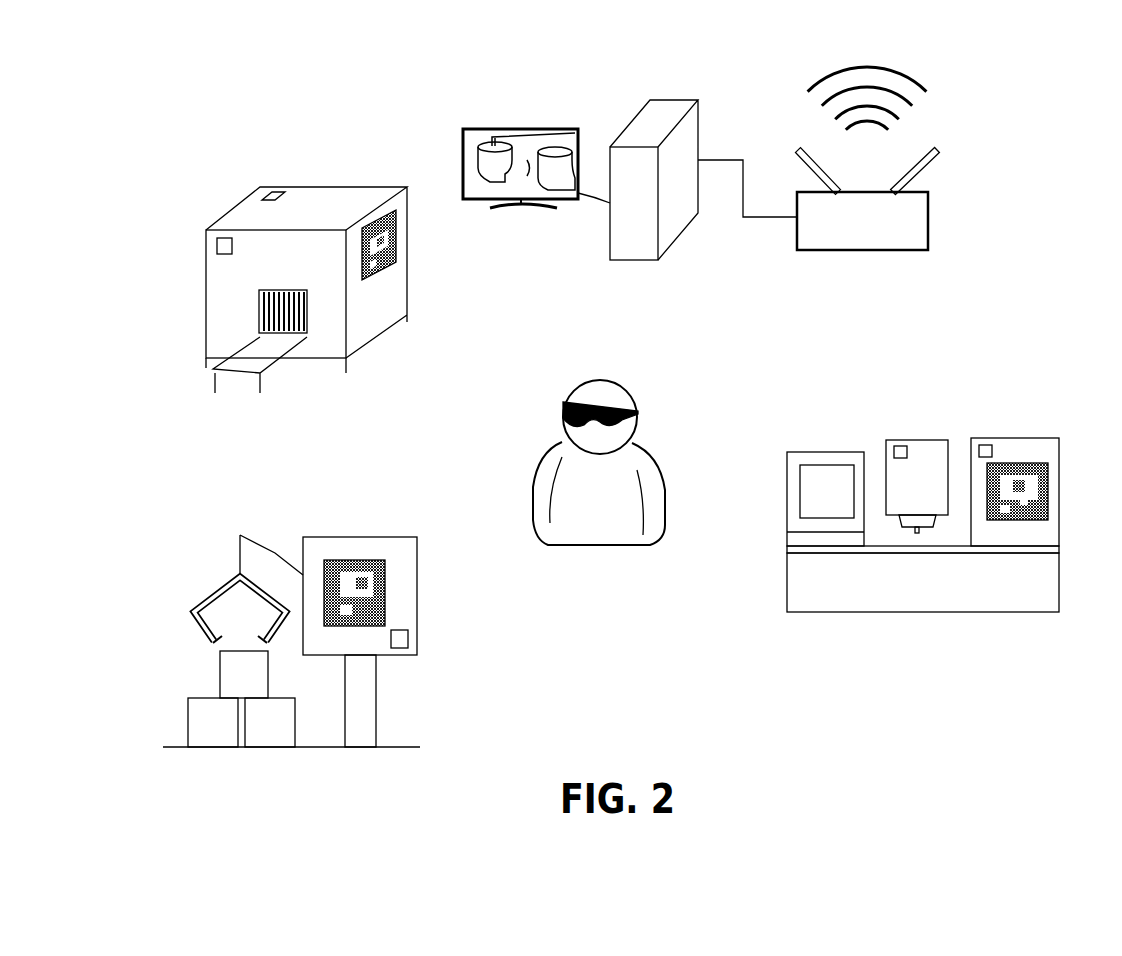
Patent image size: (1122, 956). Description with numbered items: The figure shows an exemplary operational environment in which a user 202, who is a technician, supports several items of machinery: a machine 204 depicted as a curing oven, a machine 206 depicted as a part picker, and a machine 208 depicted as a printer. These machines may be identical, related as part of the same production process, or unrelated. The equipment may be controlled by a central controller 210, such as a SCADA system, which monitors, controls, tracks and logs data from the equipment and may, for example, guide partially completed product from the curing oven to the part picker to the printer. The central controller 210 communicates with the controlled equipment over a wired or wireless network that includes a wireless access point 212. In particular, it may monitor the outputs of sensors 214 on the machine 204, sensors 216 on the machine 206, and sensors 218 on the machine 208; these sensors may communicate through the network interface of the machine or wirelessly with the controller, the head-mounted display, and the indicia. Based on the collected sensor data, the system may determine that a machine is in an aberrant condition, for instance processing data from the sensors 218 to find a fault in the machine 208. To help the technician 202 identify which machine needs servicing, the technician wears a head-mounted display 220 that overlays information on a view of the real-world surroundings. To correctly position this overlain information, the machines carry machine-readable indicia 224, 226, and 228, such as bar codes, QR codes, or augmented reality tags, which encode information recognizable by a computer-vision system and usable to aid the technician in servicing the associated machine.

The user 202 is at (663, 464).
The machine 204 is at (388, 293).
The machine 206 is at (238, 548).
The machine 208 is at (787, 517).
The central controller 210 is at (595, 127).
The wireless access point 212 is at (917, 218).
The sensors 214 is at (277, 192).
The sensors 216 is at (402, 640).
The sensors 218 is at (900, 445).
The head-mounted display 220 is at (633, 427).
The machine-readable indicia 224 is at (397, 232).
The machine-readable indicia 226 is at (385, 582).
The machine-readable indicia 228 is at (1048, 484).